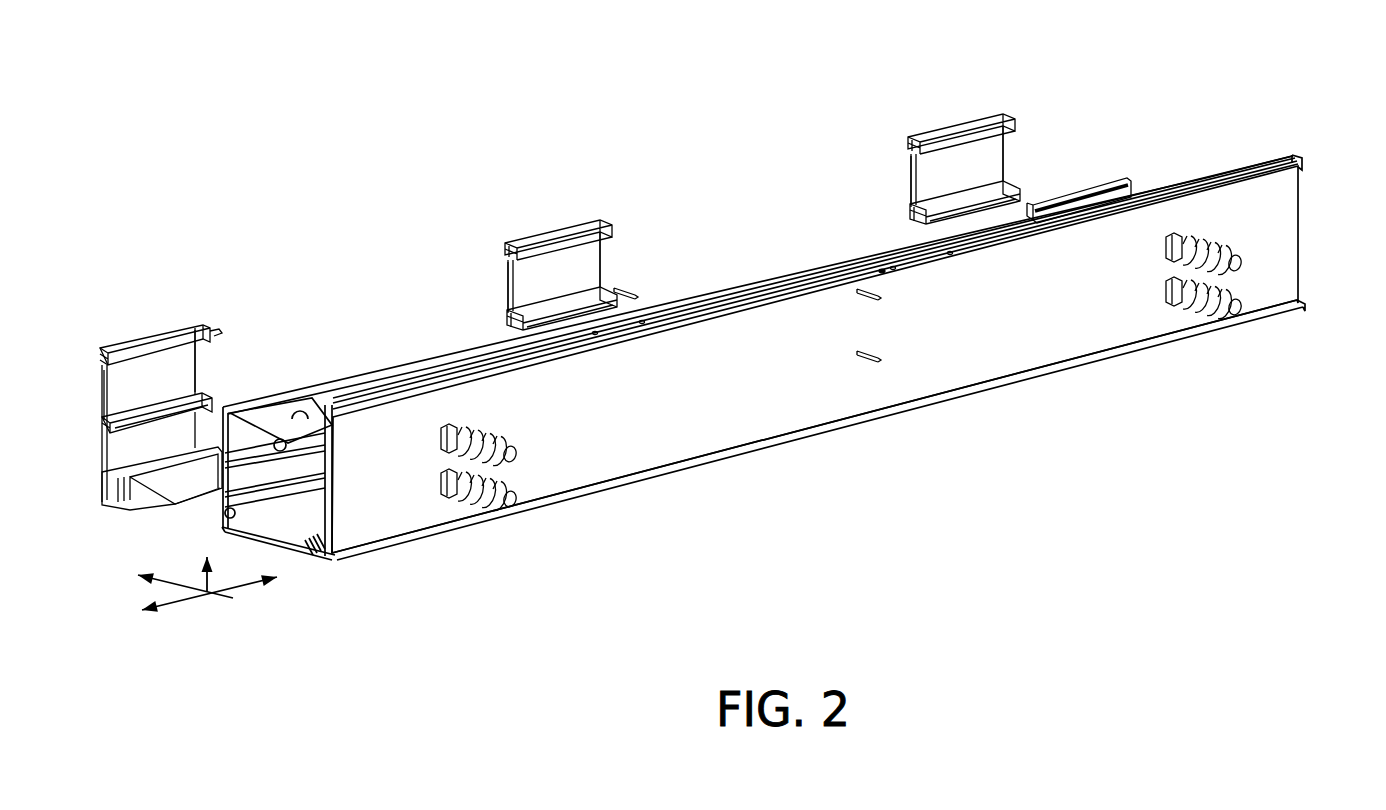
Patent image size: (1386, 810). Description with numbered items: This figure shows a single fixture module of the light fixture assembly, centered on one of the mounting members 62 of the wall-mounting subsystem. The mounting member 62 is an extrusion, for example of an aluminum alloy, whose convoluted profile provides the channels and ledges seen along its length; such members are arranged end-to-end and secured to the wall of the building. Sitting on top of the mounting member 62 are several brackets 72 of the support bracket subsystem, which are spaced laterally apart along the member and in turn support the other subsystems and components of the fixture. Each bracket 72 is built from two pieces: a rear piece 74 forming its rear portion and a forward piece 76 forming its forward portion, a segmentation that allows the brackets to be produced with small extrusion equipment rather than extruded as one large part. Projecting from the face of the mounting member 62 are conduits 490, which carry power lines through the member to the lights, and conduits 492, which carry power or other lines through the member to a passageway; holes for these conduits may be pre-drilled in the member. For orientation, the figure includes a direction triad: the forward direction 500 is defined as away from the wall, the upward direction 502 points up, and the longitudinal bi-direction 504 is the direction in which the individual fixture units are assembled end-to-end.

The mounting member 62 is at (778, 342).
The bracket 72 is at (200, 309).
The rear piece 74 is at (1092, 175).
The forward piece 76 is at (208, 366).
The conduit 490 is at (515, 447).
The conduit 492 is at (517, 502).
The forward direction 500 is at (158, 582).
The upward direction 502 is at (213, 584).
The longitudinal bi-direction 504 is at (183, 600).